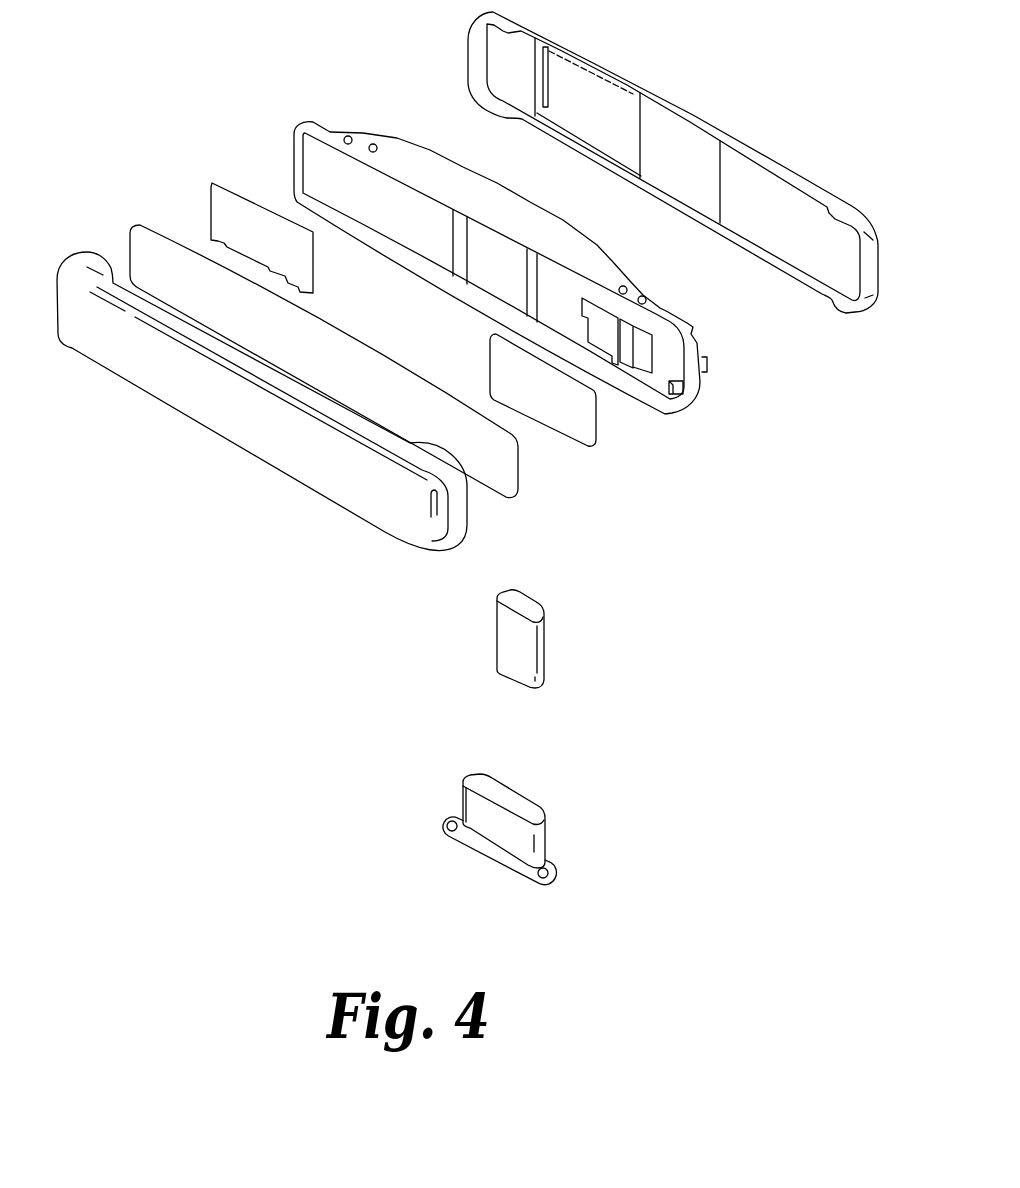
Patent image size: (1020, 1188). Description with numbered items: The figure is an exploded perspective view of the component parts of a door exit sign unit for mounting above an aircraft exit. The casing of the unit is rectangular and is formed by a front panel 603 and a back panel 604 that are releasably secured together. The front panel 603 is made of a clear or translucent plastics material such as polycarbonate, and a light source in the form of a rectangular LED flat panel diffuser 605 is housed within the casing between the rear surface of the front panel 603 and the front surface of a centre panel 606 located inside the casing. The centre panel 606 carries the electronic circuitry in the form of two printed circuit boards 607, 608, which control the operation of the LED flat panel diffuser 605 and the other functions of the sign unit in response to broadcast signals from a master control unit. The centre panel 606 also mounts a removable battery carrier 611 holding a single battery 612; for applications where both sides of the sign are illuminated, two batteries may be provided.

The front panel 603 is at (425, 527).
The back panel 604 is at (860, 228).
The LED flat panel diffuser 605 is at (515, 477).
The centre panel 606 is at (698, 388).
The printed circuit board 607 is at (222, 192).
The printed circuit board 608 is at (593, 432).
The battery carrier 611 is at (500, 852).
The battery 612 is at (540, 665).